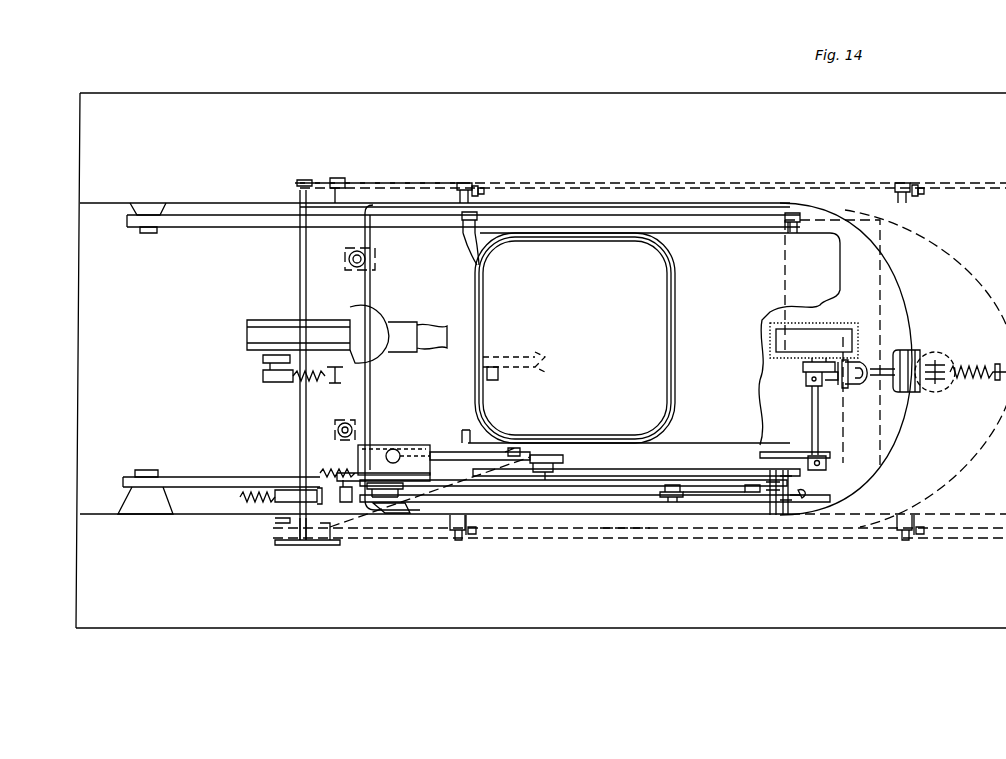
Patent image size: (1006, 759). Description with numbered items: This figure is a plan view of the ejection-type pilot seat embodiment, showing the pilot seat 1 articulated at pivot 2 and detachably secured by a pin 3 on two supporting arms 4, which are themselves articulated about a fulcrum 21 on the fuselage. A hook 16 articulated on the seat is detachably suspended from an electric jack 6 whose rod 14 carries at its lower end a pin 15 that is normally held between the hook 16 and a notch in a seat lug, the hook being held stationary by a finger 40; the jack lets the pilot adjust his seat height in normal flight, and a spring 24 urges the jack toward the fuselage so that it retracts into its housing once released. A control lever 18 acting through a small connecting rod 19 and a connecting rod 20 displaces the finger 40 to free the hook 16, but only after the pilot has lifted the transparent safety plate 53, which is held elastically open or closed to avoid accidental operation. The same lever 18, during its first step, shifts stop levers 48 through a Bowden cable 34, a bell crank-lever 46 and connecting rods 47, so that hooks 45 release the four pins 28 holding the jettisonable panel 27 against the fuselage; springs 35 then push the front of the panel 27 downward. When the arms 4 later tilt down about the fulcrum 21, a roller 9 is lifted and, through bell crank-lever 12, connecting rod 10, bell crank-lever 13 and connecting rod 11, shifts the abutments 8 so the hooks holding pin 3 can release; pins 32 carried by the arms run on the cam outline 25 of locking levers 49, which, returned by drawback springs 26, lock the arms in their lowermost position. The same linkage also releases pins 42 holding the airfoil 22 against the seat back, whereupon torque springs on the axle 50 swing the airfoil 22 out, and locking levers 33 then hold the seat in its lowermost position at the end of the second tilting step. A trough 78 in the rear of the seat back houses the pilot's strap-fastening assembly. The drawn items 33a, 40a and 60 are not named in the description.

The pilot seat 1 is at (712, 245).
The seat articulation 2 is at (464, 230).
The pin 3 is at (785, 505).
The supporting arms 4 is at (212, 222).
The electric jack 6 is at (912, 362).
The abutments 8 is at (798, 493).
The roller 9 is at (392, 512).
The connecting rod 10 is at (588, 486).
The connecting rod 11 is at (722, 488).
The bell crank-lever 12 is at (395, 481).
The bell crank-lever 13 is at (672, 500).
The jack rod 14 is at (882, 368).
The pin 15 is at (858, 384).
The hook 16 is at (838, 384).
The lever 18 is at (470, 458).
The small connecting rod 19 is at (565, 468).
The connecting rod 20 is at (636, 480).
The fulcrum 21 is at (147, 232).
The airfoil 22 is at (848, 452).
The spring 24 is at (968, 368).
The cam outline 25 is at (306, 476).
The drawback springs 26 is at (266, 493).
The jettisonable panel 27 is at (395, 240).
The pins 28 is at (478, 188).
The pins 32 is at (346, 480).
The locking levers 33 is at (270, 382).
The spring 33a is at (312, 382).
The Bowden cable 34 is at (352, 527).
The springs 35 is at (352, 268).
The finger 40 is at (806, 378).
The rod 40a is at (812, 405).
The pins 42 is at (770, 505).
The hooks 45 is at (482, 190).
The bell crank-lever 46 is at (296, 545).
The connecting rods 47 is at (408, 185).
The stop levers 48 is at (464, 183).
The locking levers 49 is at (290, 490).
The axle 50 is at (795, 213).
The transparent safety plate 53 is at (390, 446).
The stop 60 is at (494, 378).
The trough 78 is at (805, 328).